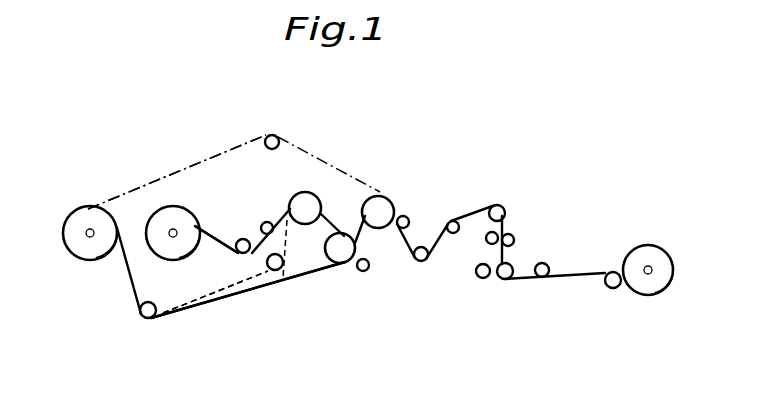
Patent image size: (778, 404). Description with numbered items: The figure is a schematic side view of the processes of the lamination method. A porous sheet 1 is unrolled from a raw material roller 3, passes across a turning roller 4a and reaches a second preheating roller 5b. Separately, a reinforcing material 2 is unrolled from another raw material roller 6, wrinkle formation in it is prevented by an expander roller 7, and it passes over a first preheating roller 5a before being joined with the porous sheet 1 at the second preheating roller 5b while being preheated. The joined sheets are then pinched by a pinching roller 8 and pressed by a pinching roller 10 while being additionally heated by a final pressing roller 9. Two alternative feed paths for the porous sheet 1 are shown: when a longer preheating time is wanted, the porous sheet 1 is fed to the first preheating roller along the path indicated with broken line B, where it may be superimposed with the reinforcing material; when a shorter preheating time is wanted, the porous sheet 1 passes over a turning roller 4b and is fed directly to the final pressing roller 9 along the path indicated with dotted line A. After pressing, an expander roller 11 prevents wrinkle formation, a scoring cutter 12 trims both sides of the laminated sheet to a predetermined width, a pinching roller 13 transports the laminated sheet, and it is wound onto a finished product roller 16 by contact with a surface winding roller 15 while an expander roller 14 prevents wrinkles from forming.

The porous sheet 1 is at (237, 298).
The reinforcing material 2 is at (217, 232).
The raw material roller 3 is at (83, 248).
The turning roller 4a is at (150, 318).
The turning roller 4b is at (265, 136).
The first preheating roller 5a is at (312, 203).
The second preheating roller 5b is at (338, 265).
The raw material roller 6 is at (158, 227).
The expander roller 7 is at (265, 222).
The pinching roller 8 is at (367, 272).
The final pressing roller 9 is at (385, 207).
The pinching roller 10 is at (408, 219).
The expander roller 11 is at (457, 234).
The scoring cutter 12 is at (512, 233).
The pinching roller 13 is at (511, 262).
The expander roller 14 is at (547, 264).
The surface winding roller 15 is at (611, 287).
The finished product roller 16 is at (644, 290).
The dotted line path A is at (192, 162).
The broken line path B is at (253, 278).